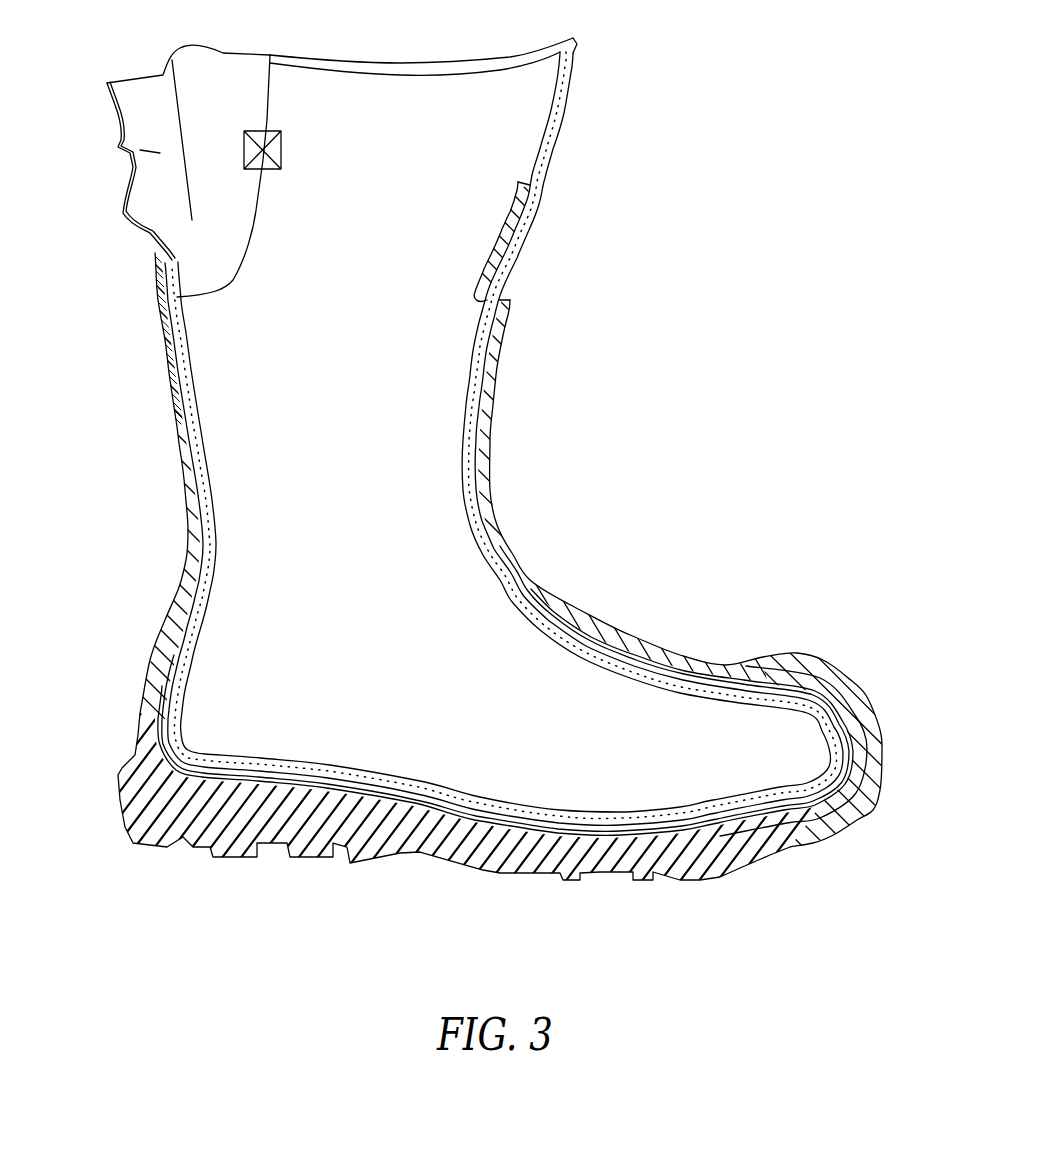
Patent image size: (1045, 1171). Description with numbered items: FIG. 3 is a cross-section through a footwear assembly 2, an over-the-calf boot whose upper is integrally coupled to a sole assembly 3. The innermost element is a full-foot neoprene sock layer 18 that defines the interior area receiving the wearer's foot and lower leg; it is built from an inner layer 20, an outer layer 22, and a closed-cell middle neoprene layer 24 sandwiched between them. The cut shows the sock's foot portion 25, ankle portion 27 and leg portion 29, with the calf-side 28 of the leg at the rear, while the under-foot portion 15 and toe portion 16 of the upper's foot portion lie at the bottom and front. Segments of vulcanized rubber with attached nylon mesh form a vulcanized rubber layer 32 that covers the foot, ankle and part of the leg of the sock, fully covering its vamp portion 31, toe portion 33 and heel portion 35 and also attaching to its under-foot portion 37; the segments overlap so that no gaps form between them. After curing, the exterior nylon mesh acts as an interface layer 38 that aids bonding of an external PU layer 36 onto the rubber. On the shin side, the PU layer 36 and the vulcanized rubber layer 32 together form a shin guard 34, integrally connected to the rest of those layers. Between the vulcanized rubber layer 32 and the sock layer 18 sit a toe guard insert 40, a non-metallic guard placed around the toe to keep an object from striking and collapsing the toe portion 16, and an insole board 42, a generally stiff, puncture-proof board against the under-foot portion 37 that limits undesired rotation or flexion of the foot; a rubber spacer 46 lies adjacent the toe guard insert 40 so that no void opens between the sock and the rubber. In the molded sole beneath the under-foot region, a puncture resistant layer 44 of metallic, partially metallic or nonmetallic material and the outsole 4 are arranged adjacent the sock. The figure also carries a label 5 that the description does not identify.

The footwear assembly 2 is at (686, 258).
The sole assembly 3 is at (425, 798).
The outsole 4 is at (425, 798).
The tread lug 5 is at (425, 798).
The under-foot portion 15 is at (425, 798).
The toe portion 16 is at (817, 731).
The sock layer 18 is at (393, 100).
The inner layer 20 is at (504, 437).
The outer layer 22 is at (504, 437).
The middle neoprene layer 24 is at (525, 112).
The foot portion 25 is at (456, 886).
The ankle portion 27 is at (195, 487).
The calf-side 28 is at (195, 487).
The leg portion 29 is at (195, 487).
The vamp portion 31 is at (641, 614).
The vulcanized rubber layer 32 is at (541, 217).
The toe portion 33 is at (790, 677).
The shin guard 34 is at (490, 397).
The heel portion 35 is at (124, 402).
The PU layer 36 is at (475, 668).
The under-foot portion 37 is at (425, 798).
The interface layer 38 is at (475, 668).
The toe guard insert 40 is at (817, 731).
The insole board 42 is at (425, 798).
The puncture resistant layer 44 is at (425, 798).
The rubber spacer 46 is at (612, 660).